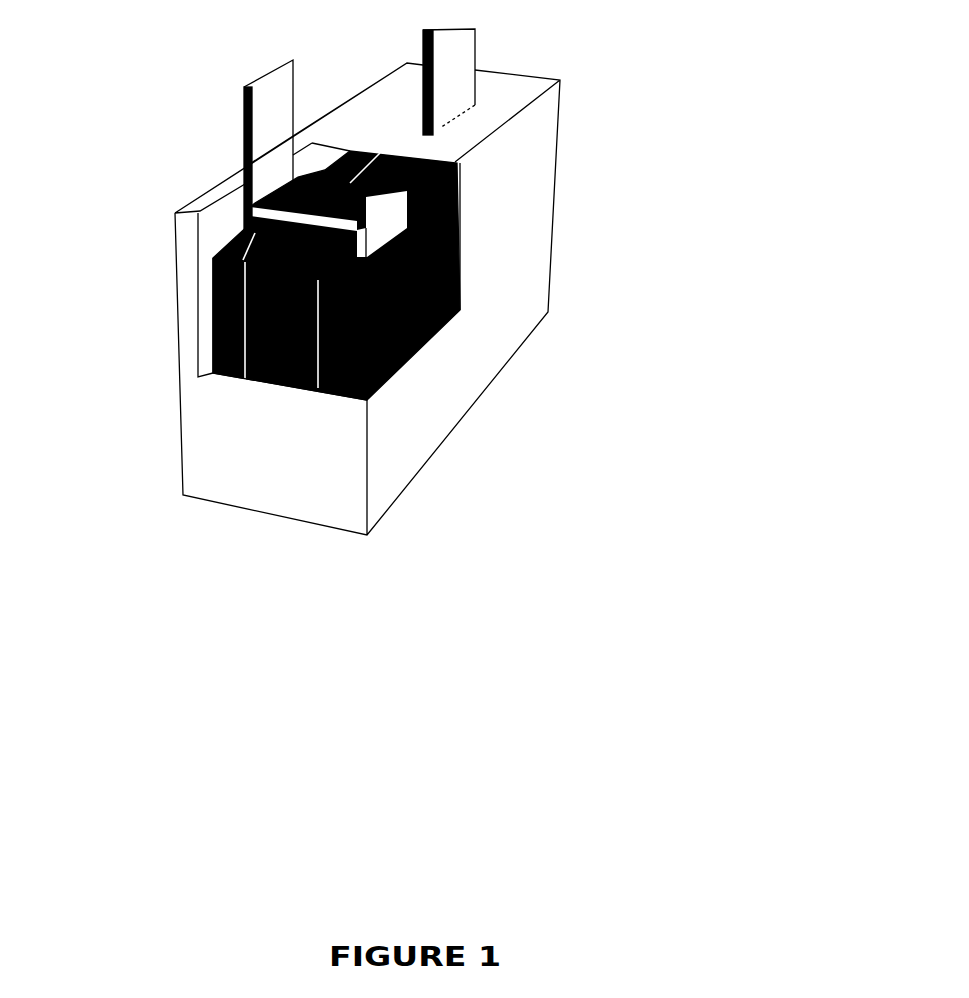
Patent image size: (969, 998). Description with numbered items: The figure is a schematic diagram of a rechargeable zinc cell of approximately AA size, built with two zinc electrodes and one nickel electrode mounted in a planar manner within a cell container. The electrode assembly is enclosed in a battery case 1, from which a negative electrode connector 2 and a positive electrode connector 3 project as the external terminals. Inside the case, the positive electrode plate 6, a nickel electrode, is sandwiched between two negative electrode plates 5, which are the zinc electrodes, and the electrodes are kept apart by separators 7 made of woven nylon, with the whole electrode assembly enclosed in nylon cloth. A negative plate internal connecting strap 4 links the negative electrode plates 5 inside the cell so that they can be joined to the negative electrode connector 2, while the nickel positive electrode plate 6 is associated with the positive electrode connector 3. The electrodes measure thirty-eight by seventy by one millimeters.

The battery case 1 is at (540, 192).
The negative electrode connector 2 is at (214, 138).
The positive electrode connector 3 is at (500, 41).
The negative plate internal connecting strap 4 is at (366, 216).
The negative electrode plate 5 is at (204, 339).
The positive electrode plate 6 is at (279, 410).
The separators 7 is at (238, 394).